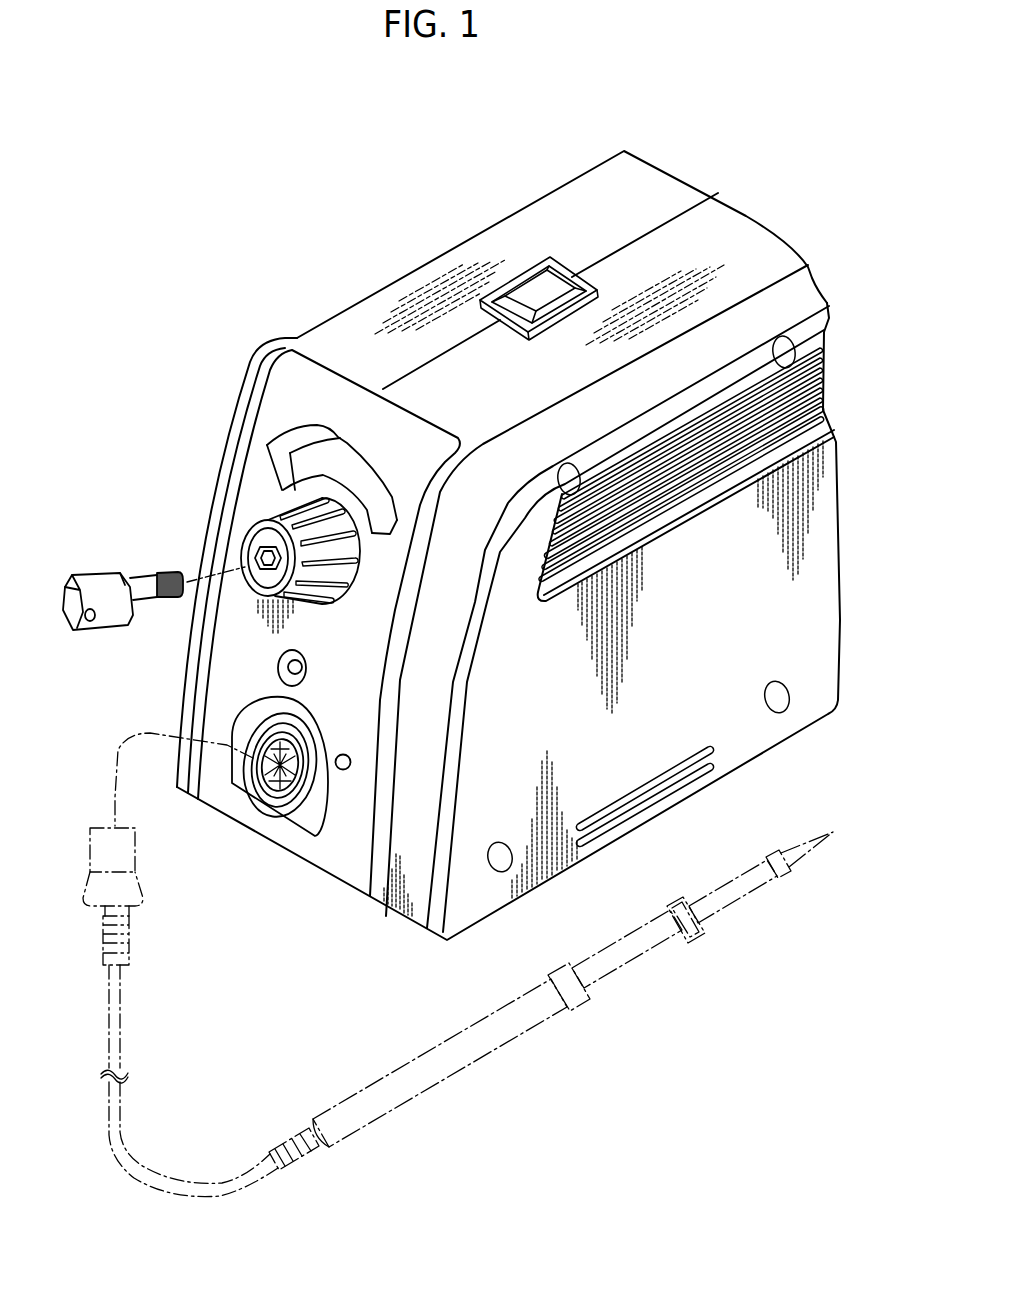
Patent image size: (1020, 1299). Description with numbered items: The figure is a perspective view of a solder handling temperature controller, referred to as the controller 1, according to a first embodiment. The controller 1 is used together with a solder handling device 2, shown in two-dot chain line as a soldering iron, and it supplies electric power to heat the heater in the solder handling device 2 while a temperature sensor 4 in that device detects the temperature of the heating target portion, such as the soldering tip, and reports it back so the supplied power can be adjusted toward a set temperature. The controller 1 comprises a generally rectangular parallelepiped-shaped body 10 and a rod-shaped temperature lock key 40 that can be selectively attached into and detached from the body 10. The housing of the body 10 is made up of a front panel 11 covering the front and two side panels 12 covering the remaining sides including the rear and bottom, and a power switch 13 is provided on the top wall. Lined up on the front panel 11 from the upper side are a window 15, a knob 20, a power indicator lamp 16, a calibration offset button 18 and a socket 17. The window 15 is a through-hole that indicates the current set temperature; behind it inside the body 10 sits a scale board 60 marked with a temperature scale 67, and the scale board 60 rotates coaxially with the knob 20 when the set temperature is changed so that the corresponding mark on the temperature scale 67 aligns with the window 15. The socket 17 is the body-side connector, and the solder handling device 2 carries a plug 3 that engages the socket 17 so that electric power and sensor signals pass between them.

The controller 1 is at (401, 181).
The solder handling device 2 is at (551, 1001).
The plug 3 is at (130, 853).
The temperature sensor 4 is at (778, 874).
The body 10 is at (391, 283).
The front panel 11 is at (287, 398).
The side panels 12 is at (573, 207).
The power switch 13 is at (540, 272).
The window 15 is at (273, 437).
The power indicator lamp 16 is at (278, 673).
The socket 17 is at (257, 757).
The calibration offset button 18 is at (342, 770).
The knob 20 is at (270, 512).
The temperature lock key 40 is at (107, 577).
The scale board 60 is at (287, 395).
The temperature scale 67 is at (287, 395).